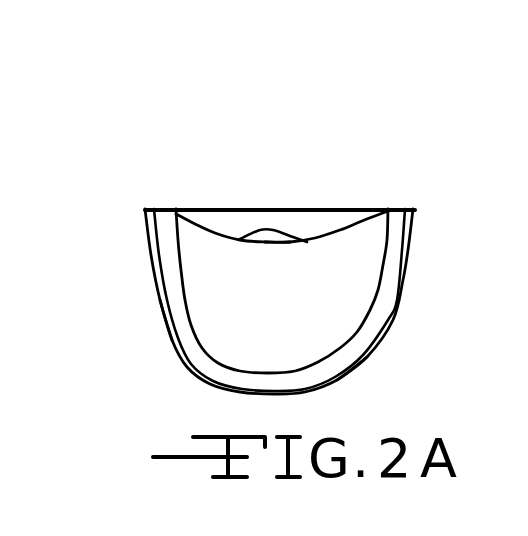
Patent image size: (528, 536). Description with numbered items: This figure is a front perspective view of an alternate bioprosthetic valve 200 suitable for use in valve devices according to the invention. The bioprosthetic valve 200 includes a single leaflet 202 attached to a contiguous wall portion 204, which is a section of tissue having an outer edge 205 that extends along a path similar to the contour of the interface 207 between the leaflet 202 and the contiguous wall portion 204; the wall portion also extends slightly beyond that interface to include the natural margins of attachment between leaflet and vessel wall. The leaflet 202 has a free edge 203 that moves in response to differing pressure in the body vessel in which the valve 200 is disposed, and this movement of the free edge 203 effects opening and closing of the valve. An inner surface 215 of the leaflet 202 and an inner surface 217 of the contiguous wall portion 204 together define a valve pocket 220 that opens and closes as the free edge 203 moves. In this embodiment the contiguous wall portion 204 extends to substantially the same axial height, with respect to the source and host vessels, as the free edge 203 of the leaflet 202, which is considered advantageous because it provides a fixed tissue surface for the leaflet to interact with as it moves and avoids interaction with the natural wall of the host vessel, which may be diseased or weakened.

The bioprosthetic valve 200 is at (297, 191).
The leaflet 202 is at (327, 292).
The free edge 203 is at (325, 233).
The contiguous wall portion 204 is at (202, 206).
The outer edge 205 is at (150, 243).
The interface 207 is at (185, 298).
The inner surface of the leaflet 215 is at (188, 365).
The inner surface of the contiguous wall portion 217 is at (268, 216).
The valve pocket 220 is at (318, 220).